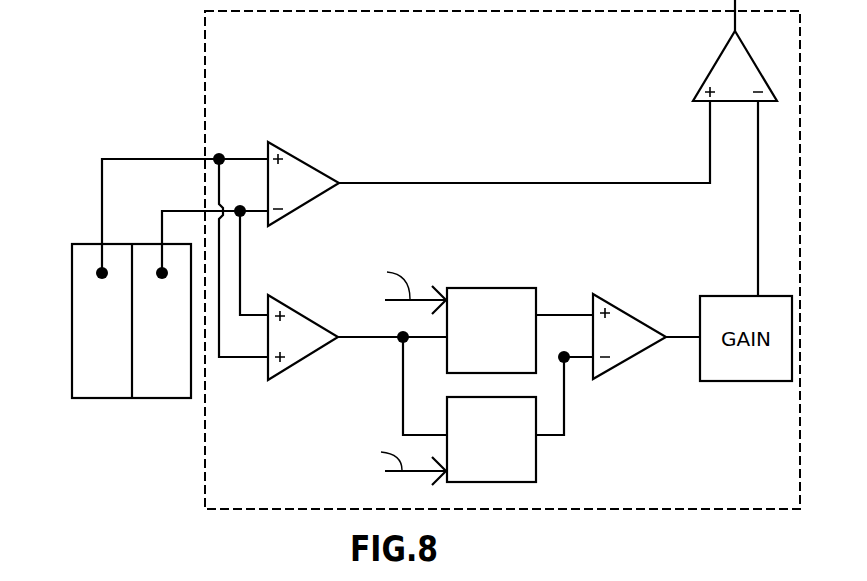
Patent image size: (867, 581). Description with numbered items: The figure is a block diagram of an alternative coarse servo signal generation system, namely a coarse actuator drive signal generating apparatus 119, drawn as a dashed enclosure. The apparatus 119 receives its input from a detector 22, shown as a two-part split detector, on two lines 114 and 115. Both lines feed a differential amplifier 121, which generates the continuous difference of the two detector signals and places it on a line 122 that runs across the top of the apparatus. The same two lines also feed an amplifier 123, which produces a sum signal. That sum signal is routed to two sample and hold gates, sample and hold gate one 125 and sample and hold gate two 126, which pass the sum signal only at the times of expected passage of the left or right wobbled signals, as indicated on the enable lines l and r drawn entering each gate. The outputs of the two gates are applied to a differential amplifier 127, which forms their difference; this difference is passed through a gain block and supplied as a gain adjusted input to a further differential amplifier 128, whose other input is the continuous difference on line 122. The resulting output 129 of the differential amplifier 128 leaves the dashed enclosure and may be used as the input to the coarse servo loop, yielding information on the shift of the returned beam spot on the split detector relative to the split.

The detector 22 is at (154, 418).
The line 114 is at (140, 158).
The line 115 is at (179, 210).
The coarse actuator drive signal generating apparatus 119 is at (612, 509).
The differential amplifier 121 is at (303, 184).
The line 122 is at (430, 182).
The amplifier 123 is at (357, 365).
The sample and hold gate 1 125 is at (484, 318).
The sample and hold gate 2 126 is at (480, 418).
The differential amplifier 127 is at (646, 336).
The differential amplifier 128 is at (735, 66).
The output 129 is at (733, 14).